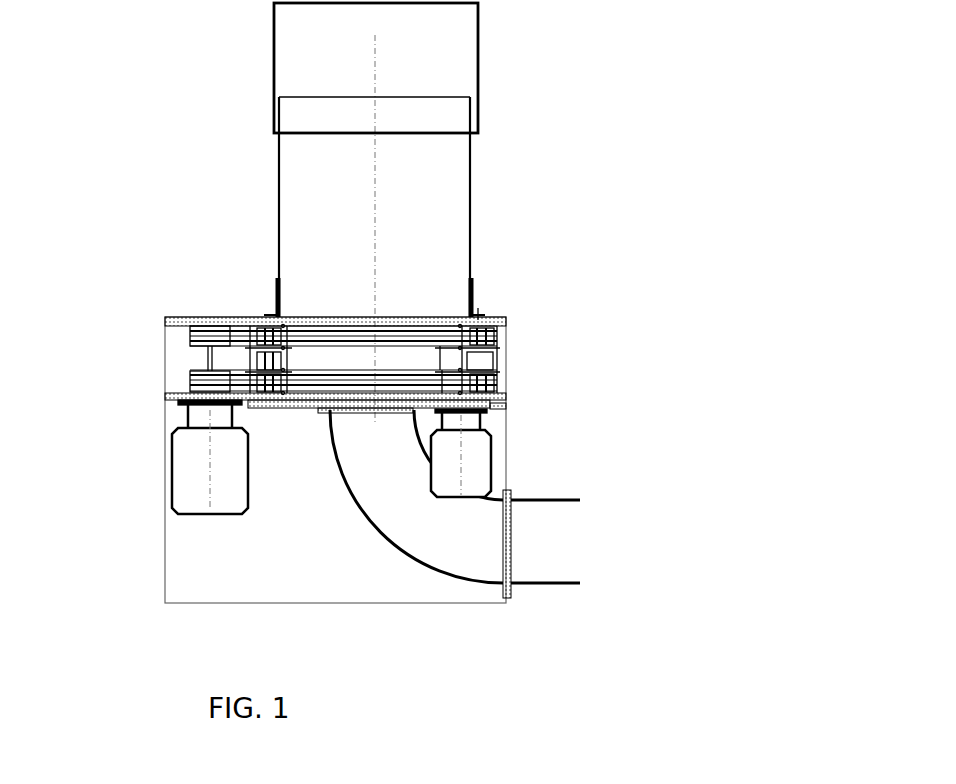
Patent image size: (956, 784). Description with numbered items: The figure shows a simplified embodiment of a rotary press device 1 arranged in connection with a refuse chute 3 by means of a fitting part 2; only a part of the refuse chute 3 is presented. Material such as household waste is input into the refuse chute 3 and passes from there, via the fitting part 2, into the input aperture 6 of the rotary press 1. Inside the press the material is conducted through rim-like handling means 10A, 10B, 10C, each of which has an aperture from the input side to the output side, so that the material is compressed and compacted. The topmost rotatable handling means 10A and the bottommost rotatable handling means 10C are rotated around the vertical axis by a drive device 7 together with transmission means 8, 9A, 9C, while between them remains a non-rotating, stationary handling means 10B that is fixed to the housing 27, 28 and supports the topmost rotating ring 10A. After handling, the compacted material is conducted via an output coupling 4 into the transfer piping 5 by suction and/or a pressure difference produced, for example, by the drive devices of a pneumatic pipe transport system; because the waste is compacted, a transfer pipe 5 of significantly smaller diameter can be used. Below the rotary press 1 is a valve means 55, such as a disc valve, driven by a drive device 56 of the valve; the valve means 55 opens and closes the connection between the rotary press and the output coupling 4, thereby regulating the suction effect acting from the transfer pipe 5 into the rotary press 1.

The rotary press device 1 is at (206, 308).
The fitting part 2 is at (290, 228).
The refuse chute 3 is at (300, 80).
The output coupling 4 is at (380, 500).
The transfer piping 5 is at (550, 545).
The input aperture 6 is at (383, 306).
The drive device 7 is at (182, 490).
The transmission means 8 is at (207, 360).
The transmission means 9A is at (241, 322).
The transmission means 9C is at (241, 383).
The topmost rotatable handling means 10A is at (462, 330).
The non-rotating handling means 10B is at (451, 360).
The bottommost rotatable handling means 10C is at (442, 385).
The housing 27 is at (170, 316).
The housing 28 is at (262, 409).
The valve means 55 is at (495, 403).
The drive device of the valve 56 is at (480, 472).